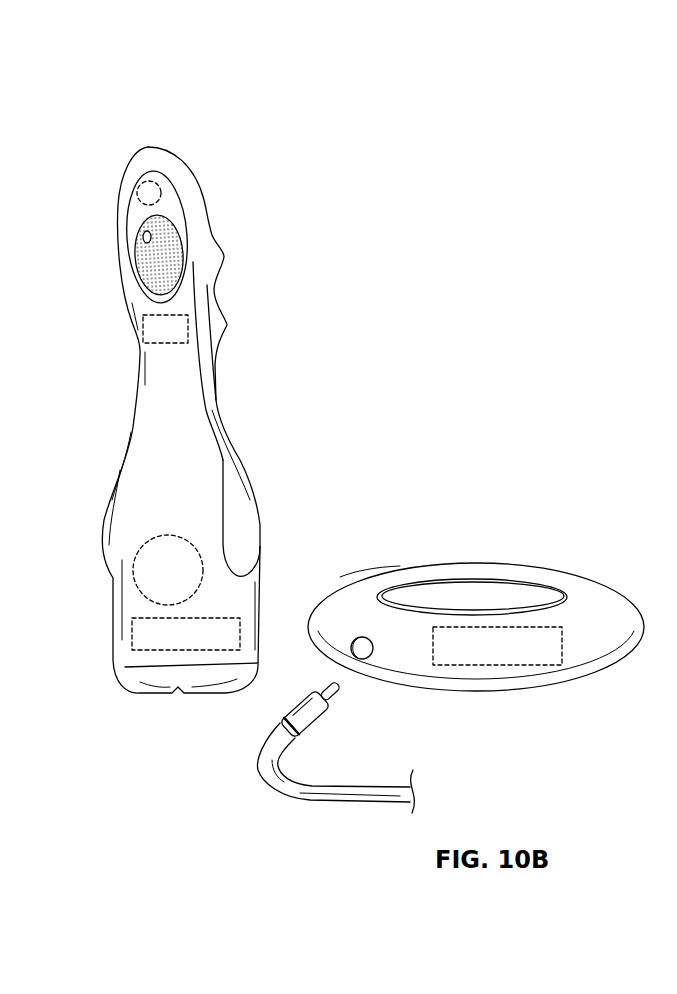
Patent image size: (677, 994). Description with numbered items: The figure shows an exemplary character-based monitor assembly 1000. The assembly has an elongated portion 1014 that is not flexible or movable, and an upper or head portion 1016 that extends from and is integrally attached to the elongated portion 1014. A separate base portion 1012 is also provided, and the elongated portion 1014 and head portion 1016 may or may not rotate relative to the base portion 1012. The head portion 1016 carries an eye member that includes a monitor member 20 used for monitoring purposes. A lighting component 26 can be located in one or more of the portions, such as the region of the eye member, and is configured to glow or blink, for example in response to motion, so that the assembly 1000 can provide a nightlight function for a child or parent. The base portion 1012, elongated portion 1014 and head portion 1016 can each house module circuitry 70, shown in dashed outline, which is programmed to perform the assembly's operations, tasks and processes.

The monitor assembly 1000 is at (172, 100).
The upper/head portion 1016 is at (163, 168).
The monitor member 20 is at (143, 235).
The elongated section/portion 1014 is at (193, 410).
The lighting component 26 is at (155, 568).
The module circuitry 70 is at (188, 328).
The base portion 1012 is at (592, 587).